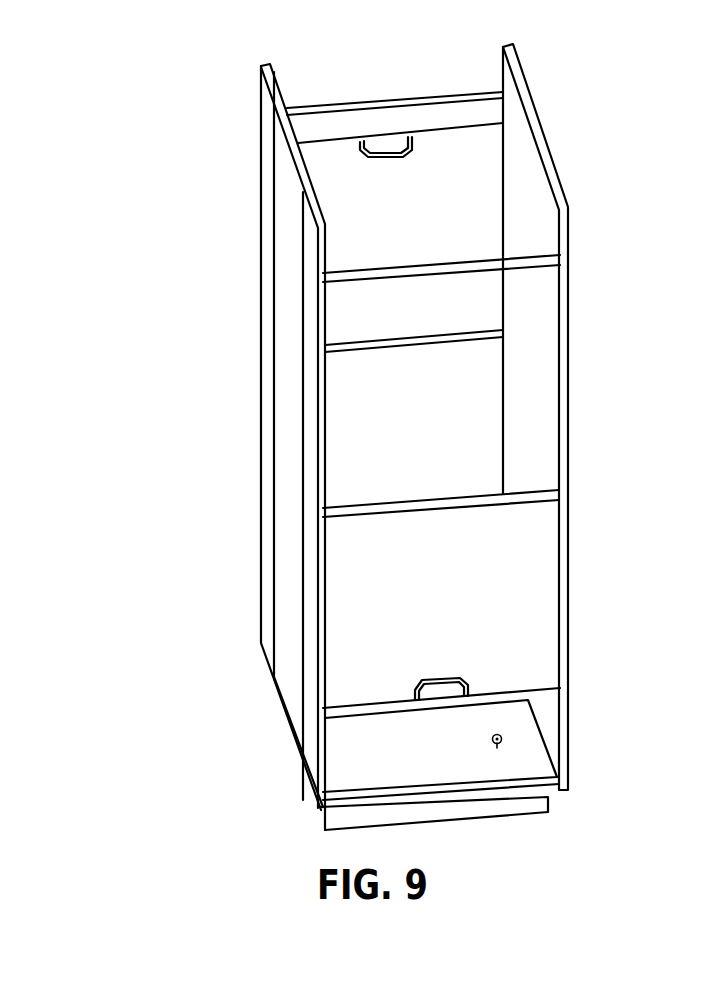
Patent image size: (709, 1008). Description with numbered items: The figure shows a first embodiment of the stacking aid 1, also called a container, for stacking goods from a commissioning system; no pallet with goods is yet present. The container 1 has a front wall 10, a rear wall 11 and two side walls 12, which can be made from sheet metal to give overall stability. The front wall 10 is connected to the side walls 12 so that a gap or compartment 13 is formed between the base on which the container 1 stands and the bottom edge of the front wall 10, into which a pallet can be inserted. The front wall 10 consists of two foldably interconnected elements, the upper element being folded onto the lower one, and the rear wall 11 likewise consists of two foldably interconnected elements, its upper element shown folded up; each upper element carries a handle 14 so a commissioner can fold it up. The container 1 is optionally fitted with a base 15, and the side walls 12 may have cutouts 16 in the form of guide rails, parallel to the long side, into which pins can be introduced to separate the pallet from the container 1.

The stacking aid 1 is at (380, 429).
The front wall 10 is at (455, 567).
The rear wall 11 is at (368, 349).
The side wall 12 is at (258, 518).
The compartment 13 is at (503, 739).
The handle 14 is at (390, 154).
The base 15 is at (413, 757).
The cutouts 16 is at (303, 370).